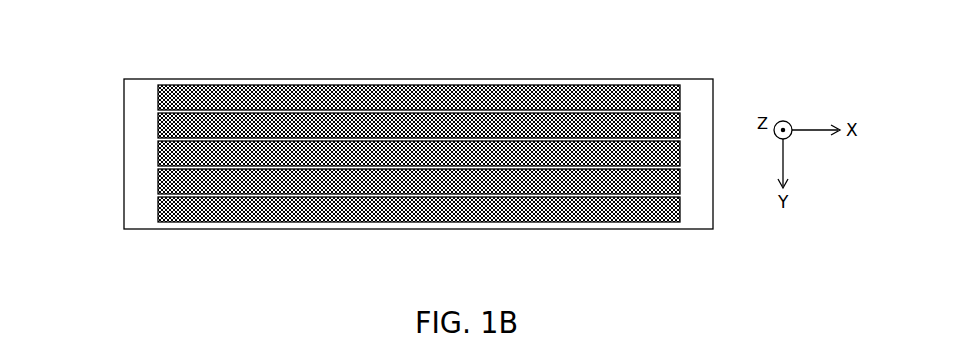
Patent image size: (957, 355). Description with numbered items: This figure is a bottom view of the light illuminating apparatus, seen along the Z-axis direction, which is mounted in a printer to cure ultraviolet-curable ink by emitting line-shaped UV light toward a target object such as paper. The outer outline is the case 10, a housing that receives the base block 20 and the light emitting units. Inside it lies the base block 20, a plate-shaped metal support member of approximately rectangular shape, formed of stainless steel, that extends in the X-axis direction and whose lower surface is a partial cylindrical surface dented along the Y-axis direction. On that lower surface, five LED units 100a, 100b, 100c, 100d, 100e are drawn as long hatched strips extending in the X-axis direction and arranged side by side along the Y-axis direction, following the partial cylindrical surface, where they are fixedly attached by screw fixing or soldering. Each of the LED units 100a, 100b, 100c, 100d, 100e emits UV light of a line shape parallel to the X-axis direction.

The case 10 is at (391, 157).
The base block 20 is at (695, 218).
The LED unit 100a is at (158, 102).
The LED unit 100b is at (158, 130).
The LED unit 100c is at (158, 158).
The LED unit 100d is at (158, 186).
The LED unit 100e is at (158, 214).